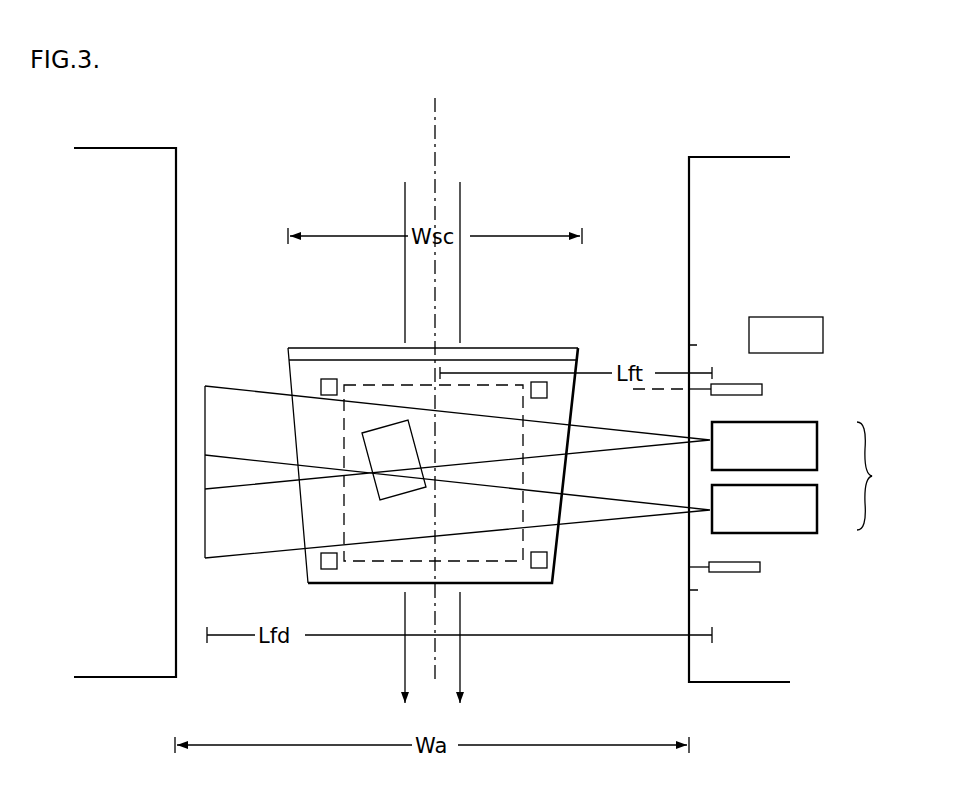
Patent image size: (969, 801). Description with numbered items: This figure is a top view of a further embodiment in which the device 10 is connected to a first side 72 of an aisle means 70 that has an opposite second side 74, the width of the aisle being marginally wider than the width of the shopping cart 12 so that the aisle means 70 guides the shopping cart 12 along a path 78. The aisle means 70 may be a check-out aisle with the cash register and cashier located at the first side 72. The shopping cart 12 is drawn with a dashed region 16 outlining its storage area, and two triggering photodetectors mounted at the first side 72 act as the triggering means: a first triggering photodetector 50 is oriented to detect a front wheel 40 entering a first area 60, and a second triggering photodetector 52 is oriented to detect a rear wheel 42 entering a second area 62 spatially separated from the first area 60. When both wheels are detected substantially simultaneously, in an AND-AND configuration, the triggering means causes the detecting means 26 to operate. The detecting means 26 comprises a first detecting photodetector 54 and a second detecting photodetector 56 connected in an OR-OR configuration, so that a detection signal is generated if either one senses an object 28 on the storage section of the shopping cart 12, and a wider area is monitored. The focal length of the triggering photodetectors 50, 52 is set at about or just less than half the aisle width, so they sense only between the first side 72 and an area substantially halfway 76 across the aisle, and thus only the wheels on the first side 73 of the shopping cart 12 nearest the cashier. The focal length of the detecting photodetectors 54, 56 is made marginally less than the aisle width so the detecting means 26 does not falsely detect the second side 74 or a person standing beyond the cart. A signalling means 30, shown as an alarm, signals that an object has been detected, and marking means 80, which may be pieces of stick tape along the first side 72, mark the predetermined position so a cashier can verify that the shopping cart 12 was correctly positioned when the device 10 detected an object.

The device 10 is at (758, 292).
The shopping cart 12 is at (283, 350).
The sensor unit 16 is at (374, 392).
The detecting means 26 is at (880, 476).
The object 28 is at (419, 438).
The signalling means 30 is at (828, 328).
The front wheel 40 is at (550, 547).
The rear wheel 42 is at (550, 387).
The first triggering photodetector 50 is at (750, 574).
The second triggering photodetector 52 is at (768, 392).
The first detecting photodetector 54 is at (821, 517).
The second detecting photodetector 56 is at (821, 453).
The first area 60 is at (643, 547).
The second area 62 is at (677, 393).
The aisle means 70 is at (529, 145).
The first side 72 is at (688, 155).
The first side of the shopping cart 73 is at (539, 343).
The second side 74 is at (188, 169).
The area substantially halfway 76 is at (441, 125).
The path 78 is at (432, 446).
The marking means 80 is at (694, 344).